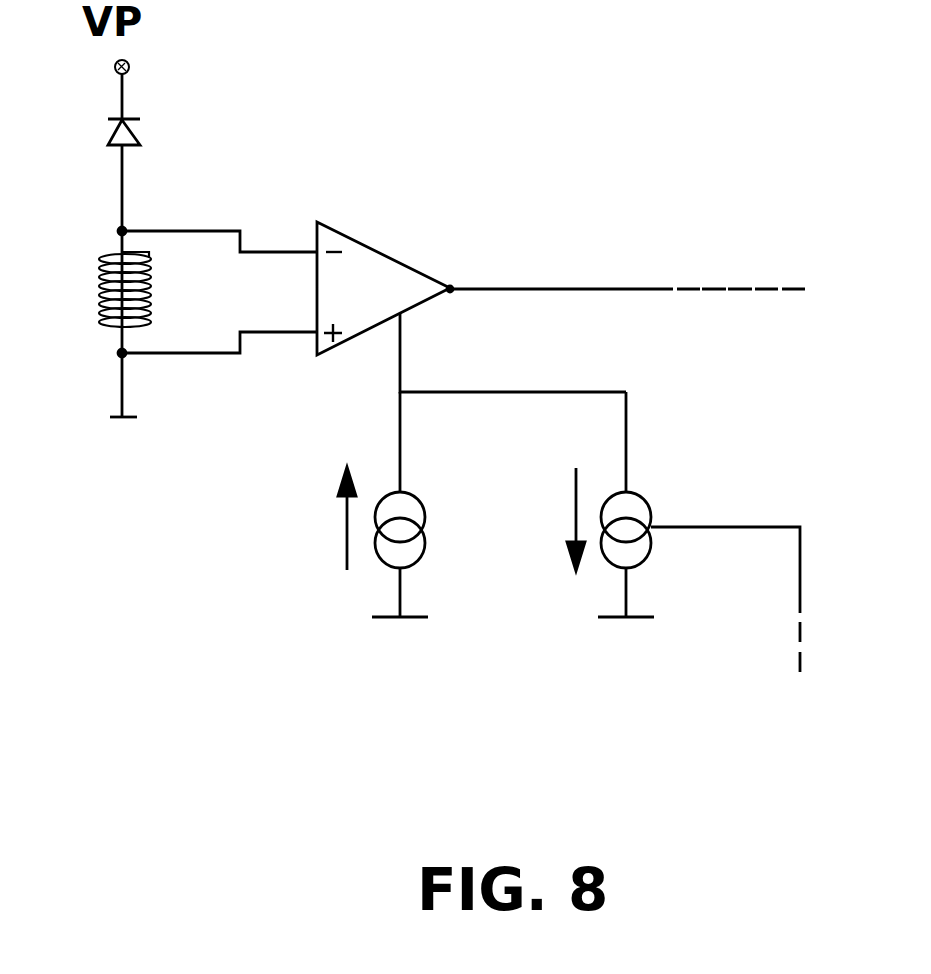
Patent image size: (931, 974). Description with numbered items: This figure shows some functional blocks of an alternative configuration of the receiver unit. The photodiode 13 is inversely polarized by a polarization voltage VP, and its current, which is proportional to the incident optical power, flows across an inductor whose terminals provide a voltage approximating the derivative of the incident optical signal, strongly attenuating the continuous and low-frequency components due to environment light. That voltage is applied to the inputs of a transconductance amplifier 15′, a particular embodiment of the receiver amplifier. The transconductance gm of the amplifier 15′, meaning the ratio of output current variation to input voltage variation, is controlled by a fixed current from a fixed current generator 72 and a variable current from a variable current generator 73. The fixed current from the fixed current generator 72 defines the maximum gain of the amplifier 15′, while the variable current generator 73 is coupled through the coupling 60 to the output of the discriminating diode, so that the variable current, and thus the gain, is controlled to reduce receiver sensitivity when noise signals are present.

The photodiode 13 is at (226, 123).
The transconductance amplifier 15′ is at (436, 210).
The coupling 60 is at (800, 537).
The fixed current generator 72 is at (413, 545).
The variable current generator 73 is at (641, 543).